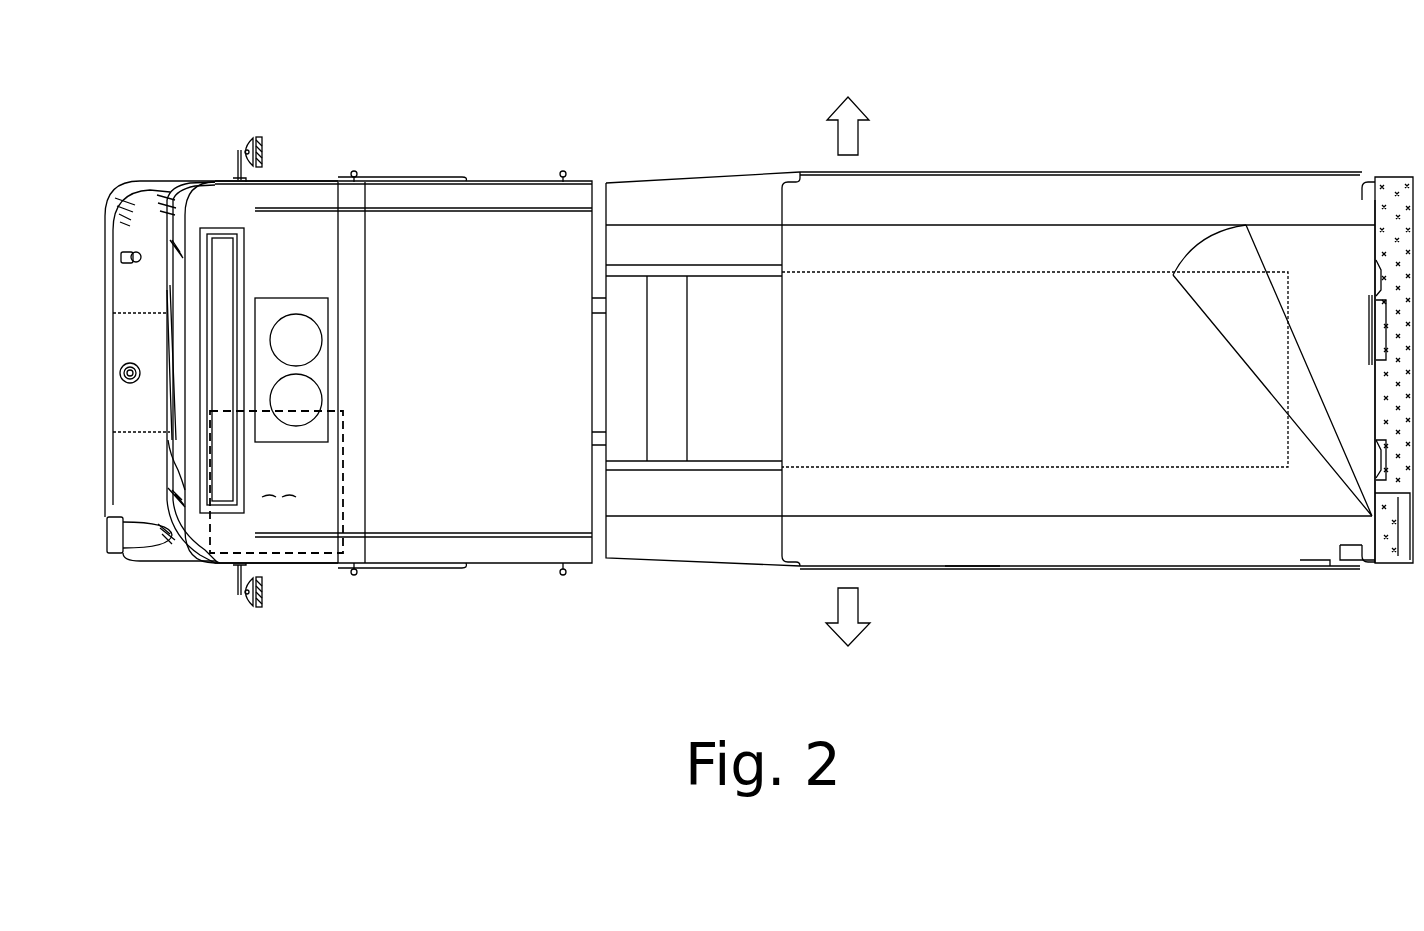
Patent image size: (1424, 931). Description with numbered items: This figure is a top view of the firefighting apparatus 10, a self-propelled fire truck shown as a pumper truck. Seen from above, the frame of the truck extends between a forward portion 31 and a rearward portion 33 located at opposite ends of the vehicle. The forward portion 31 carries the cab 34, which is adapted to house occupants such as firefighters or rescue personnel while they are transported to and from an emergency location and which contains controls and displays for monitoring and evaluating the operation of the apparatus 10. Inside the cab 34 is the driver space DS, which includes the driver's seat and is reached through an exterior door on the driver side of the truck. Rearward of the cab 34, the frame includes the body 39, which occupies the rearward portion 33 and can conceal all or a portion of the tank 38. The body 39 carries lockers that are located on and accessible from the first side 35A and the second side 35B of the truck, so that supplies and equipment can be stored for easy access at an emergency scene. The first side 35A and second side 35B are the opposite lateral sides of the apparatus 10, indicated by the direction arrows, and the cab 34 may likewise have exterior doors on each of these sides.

The firefighting apparatus 10 is at (398, 92).
The forward portion 31 is at (585, 174).
The rearward portion 33 is at (683, 177).
The cab 34 is at (215, 178).
The body 39 is at (293, 578).
The tank 38 is at (990, 517).
The first side 35A is at (848, 632).
The second side 35B is at (849, 113).
The driver space DS is at (276, 482).